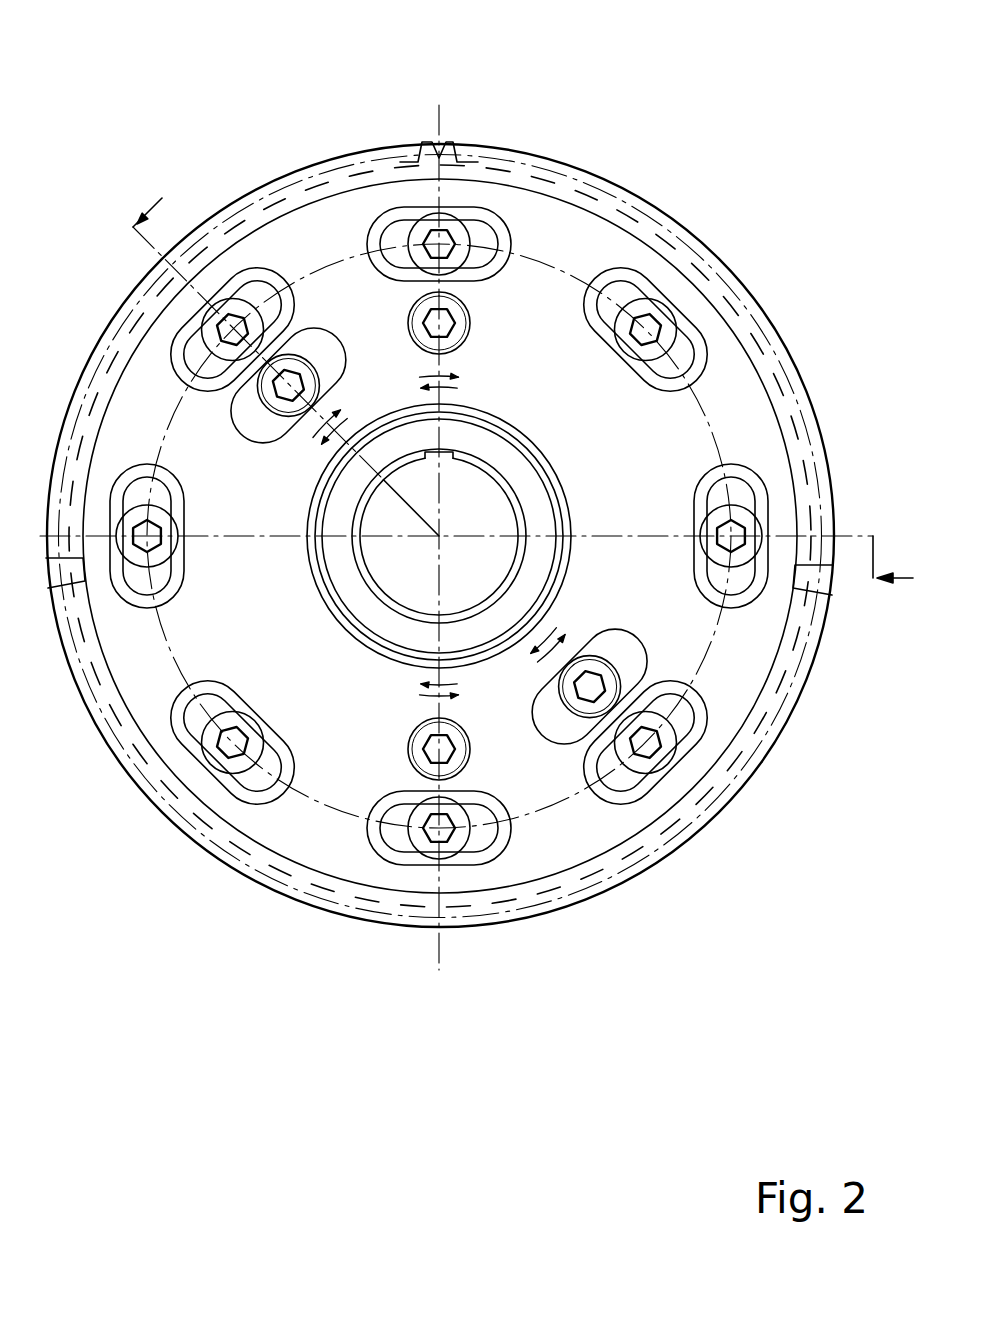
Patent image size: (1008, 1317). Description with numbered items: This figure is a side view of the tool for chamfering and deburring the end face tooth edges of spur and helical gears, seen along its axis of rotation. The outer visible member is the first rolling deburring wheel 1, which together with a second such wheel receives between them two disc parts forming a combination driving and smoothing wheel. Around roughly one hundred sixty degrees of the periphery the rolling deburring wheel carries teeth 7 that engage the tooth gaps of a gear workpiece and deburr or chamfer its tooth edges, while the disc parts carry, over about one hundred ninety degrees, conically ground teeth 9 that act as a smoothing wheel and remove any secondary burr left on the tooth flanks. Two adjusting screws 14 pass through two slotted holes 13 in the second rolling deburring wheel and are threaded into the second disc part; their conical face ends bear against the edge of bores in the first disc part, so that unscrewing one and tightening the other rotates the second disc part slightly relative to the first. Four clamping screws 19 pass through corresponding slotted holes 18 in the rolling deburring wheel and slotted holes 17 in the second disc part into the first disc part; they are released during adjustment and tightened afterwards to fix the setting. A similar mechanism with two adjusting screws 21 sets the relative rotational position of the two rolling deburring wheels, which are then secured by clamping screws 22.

The first rolling deburring wheel 1 is at (343, 880).
The teeth 7 is at (222, 855).
The conically ground teeth 9 is at (140, 287).
The slotted holes 13 is at (265, 445).
The adjusting screws 14 is at (295, 375).
The slotted holes 17 is at (284, 296).
The slotted holes 18 is at (262, 270).
The clamping screws 19 is at (231, 327).
The adjusting screws 21 is at (447, 324).
The clamping screws 22 is at (441, 243).